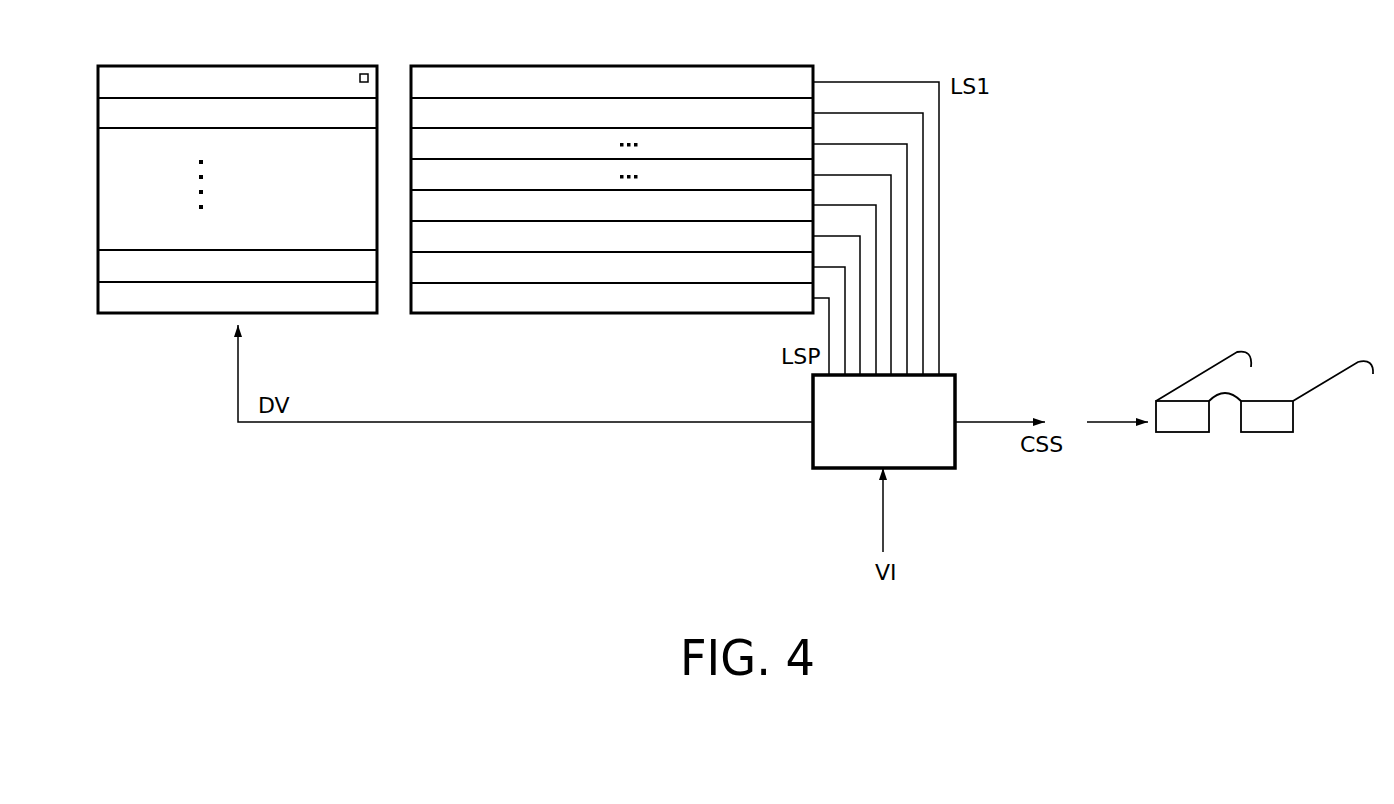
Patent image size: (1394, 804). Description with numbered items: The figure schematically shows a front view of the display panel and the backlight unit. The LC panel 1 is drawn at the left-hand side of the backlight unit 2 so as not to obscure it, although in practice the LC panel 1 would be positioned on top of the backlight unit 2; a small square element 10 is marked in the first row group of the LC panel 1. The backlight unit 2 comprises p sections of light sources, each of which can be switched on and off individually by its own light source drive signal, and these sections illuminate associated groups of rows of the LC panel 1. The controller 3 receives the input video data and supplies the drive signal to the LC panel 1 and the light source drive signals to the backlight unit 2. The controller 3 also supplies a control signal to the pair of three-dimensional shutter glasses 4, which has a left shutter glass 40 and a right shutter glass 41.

The LC panel 1 is at (216, 66).
The pixel 10 is at (365, 72).
The backlight unit 2 is at (449, 66).
The controller 3 is at (946, 388).
The pair of 3D shutter glasses 4 is at (1264, 401).
The left shutter glass 40 is at (1272, 426).
The right shutter glass 41 is at (1183, 426).